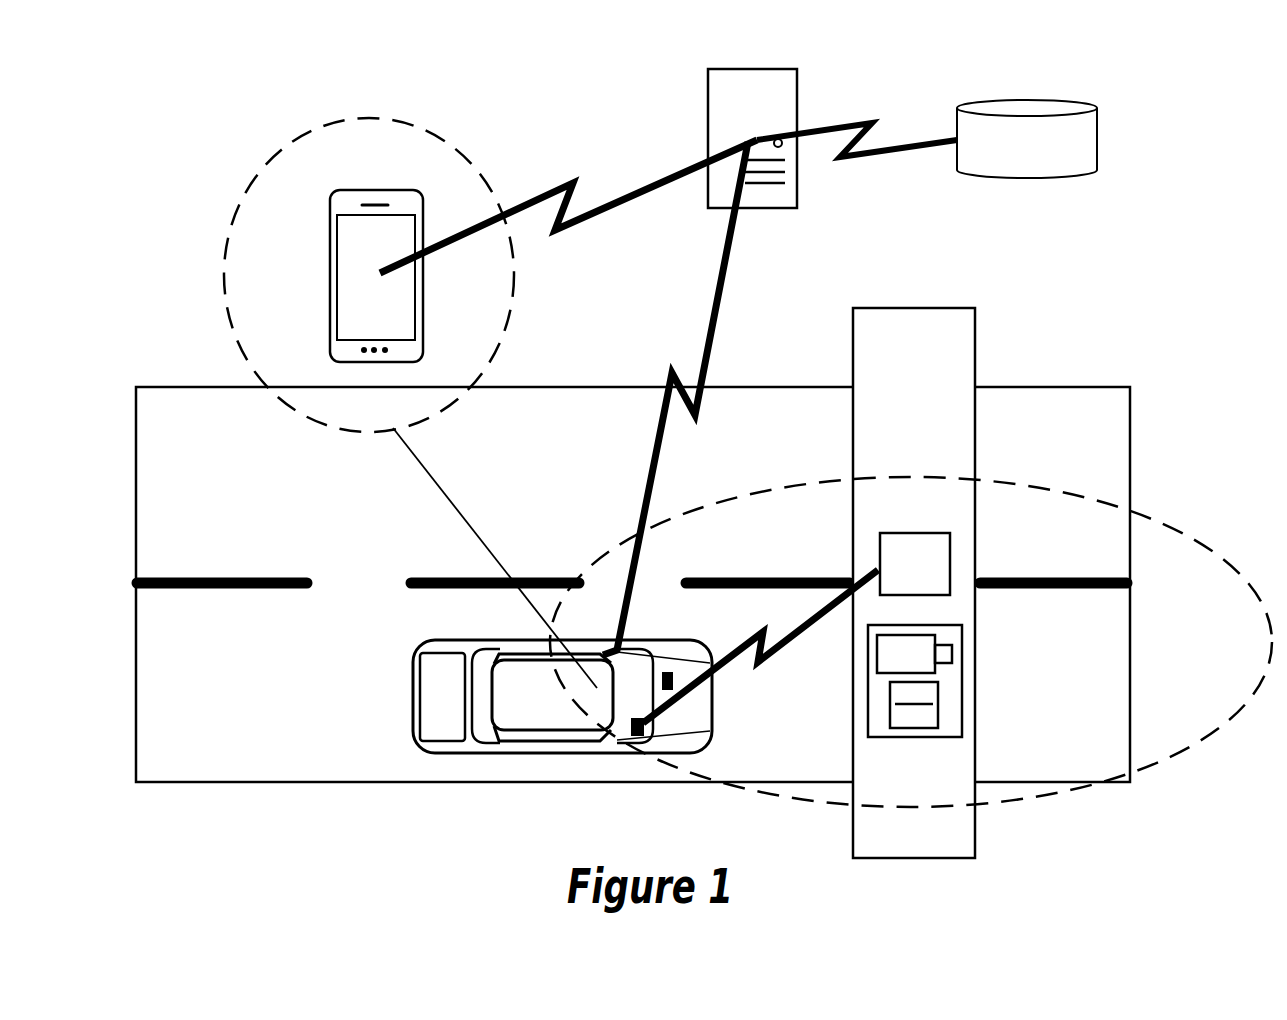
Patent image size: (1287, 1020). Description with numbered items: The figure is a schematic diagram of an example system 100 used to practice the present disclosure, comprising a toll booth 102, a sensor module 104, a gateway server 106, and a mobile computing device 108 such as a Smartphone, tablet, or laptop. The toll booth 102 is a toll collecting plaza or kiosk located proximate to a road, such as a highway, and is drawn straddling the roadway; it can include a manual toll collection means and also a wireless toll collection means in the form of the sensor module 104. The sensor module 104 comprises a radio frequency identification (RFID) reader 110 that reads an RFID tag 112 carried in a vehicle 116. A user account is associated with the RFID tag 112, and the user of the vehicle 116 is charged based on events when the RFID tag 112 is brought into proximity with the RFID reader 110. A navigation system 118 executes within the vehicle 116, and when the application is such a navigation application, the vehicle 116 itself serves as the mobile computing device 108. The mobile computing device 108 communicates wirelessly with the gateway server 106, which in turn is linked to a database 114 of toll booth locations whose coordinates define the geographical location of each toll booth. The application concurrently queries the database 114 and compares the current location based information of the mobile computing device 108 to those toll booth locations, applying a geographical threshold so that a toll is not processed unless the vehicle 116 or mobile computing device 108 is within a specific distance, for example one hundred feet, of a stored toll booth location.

The system 100 is at (1130, 67).
The toll booth 102 is at (982, 286).
The sensor module 104 is at (996, 662).
The gateway server 106 is at (735, 114).
The mobile computing device 108 is at (360, 317).
The radio frequency identification (RFID) reader 110 is at (900, 576).
The RFID tag 112 is at (645, 722).
The database 114 is at (1010, 152).
The vehicle 116 is at (515, 707).
The navigation system 118 is at (672, 676).